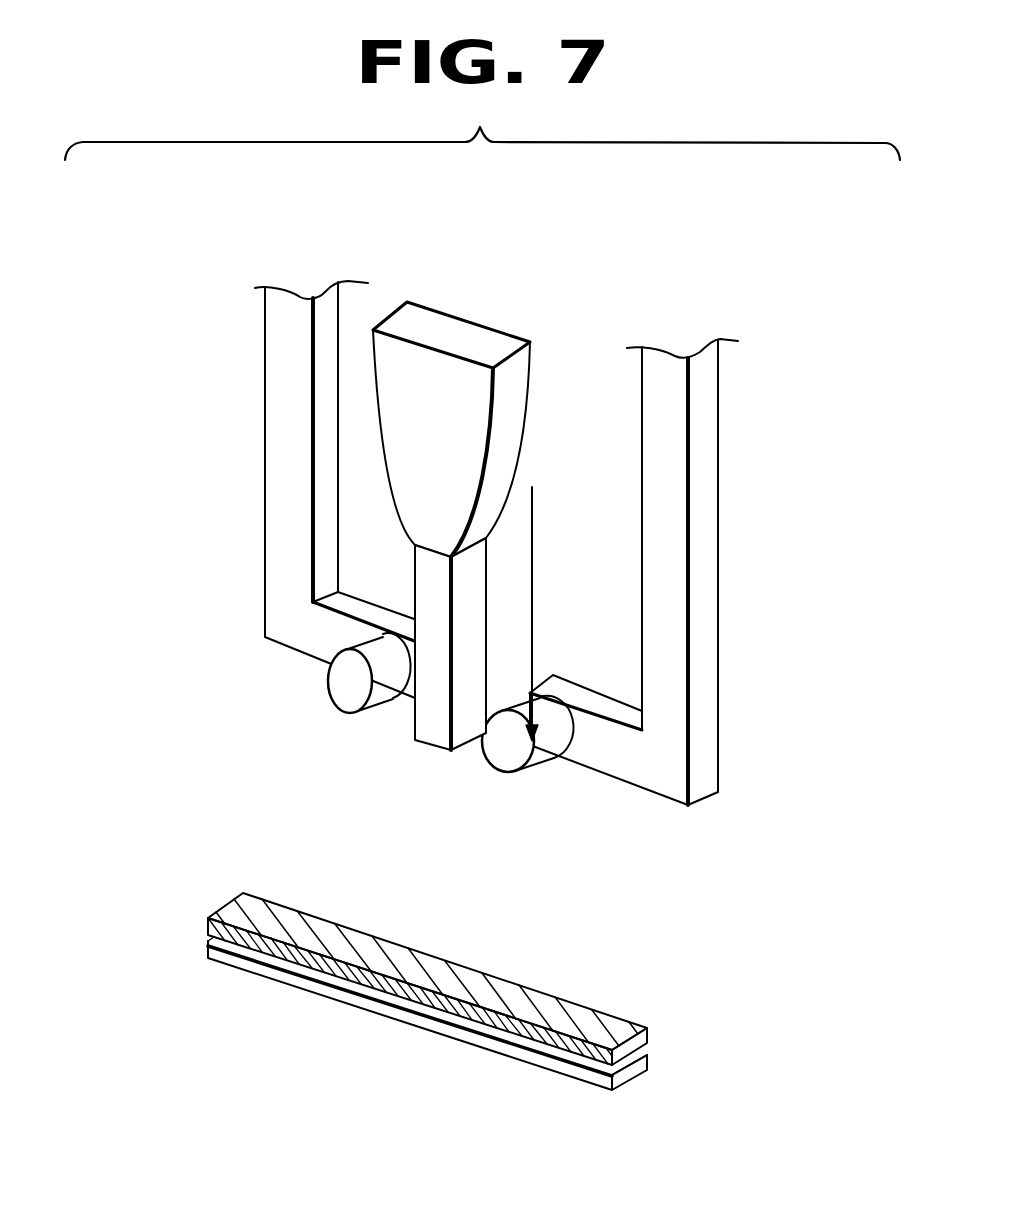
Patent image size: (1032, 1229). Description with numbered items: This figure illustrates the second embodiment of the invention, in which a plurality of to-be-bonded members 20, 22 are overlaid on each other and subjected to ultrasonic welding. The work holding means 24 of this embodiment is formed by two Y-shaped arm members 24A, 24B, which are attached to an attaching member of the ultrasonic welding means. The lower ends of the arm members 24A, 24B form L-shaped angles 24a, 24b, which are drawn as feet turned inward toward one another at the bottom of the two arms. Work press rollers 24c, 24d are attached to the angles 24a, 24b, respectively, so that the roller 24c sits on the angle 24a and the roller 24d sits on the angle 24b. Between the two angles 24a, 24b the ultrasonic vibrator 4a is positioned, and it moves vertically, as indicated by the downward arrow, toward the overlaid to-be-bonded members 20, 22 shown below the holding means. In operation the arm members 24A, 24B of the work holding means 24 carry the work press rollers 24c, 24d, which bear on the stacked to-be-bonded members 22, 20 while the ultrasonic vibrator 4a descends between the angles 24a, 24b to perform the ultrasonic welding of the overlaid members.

The work holding means 24 is at (477, 314).
The arm member 24A is at (707, 436).
The arm member 24B is at (278, 358).
The angle 24a is at (633, 768).
The angle 24b is at (298, 643).
The work press roller 24c is at (507, 755).
The work press roller 24d is at (350, 690).
The ultrasonic vibrator 4a is at (420, 432).
The to-be-bonded member 22 is at (208, 920).
The to-be-bonded member 20 is at (208, 948).